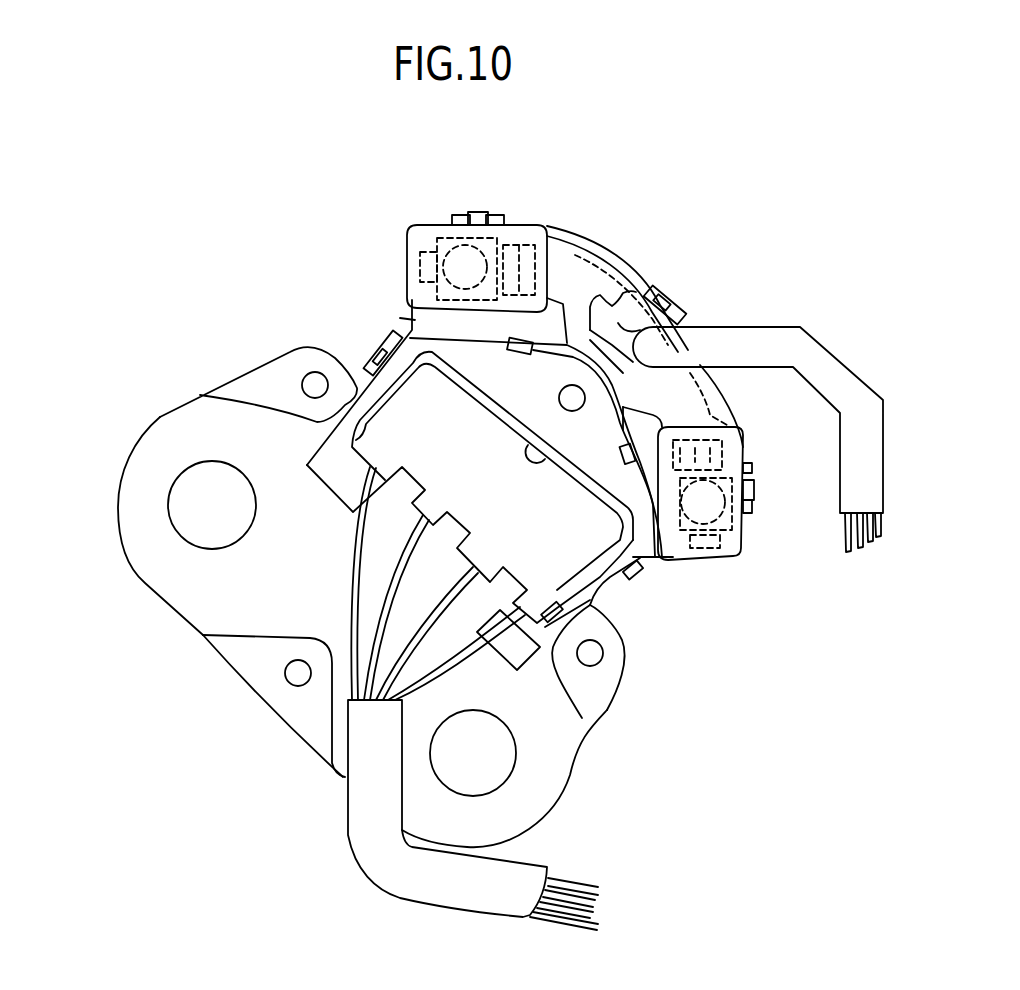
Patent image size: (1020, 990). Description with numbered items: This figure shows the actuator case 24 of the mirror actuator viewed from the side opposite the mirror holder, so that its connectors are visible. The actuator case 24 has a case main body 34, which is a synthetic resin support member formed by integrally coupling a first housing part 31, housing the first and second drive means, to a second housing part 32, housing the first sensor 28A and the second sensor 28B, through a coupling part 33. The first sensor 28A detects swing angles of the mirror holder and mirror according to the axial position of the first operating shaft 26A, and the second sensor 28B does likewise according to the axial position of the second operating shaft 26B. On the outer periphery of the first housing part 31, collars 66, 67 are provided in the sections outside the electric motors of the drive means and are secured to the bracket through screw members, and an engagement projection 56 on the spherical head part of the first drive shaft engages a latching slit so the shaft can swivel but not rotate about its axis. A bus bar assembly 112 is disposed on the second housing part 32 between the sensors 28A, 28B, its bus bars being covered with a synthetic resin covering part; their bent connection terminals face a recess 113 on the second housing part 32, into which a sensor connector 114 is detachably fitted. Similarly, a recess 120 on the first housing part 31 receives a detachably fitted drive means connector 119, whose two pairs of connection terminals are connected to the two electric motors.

The actuator case 24 is at (556, 812).
The first operating shaft 26A is at (447, 245).
The second operating shaft 26B is at (728, 522).
The first sensor 28A is at (525, 245).
The second sensor 28B is at (727, 455).
The first housing part 31 is at (357, 403).
The second housing part 32 is at (415, 243).
The coupling part 33 is at (412, 320).
The case main body 34 is at (293, 193).
The engagement projection 56 is at (278, 686).
The collar 66 is at (602, 705).
The collar 67 is at (262, 380).
The bus bar assembly 112 is at (575, 254).
The recess 113 is at (632, 306).
The sensor connector 114 is at (620, 306).
The drive means connector 119 is at (511, 483).
The recess 120 is at (547, 463).